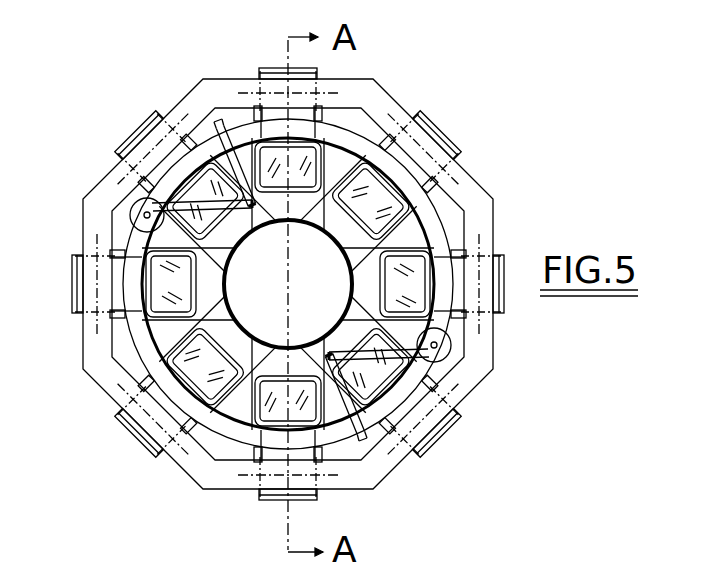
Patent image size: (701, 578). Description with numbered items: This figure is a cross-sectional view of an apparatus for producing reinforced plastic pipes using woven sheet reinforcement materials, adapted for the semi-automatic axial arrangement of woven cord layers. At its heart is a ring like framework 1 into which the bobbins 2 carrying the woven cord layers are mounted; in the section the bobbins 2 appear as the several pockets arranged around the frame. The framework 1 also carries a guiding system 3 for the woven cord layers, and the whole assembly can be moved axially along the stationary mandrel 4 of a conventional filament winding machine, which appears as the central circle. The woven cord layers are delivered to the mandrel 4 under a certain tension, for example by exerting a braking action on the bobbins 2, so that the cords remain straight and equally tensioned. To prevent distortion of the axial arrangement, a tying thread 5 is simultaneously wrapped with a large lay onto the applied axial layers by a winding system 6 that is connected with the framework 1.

The ring like framework 1 is at (492, 206).
The bobbins 2 is at (444, 132).
The guiding system 3 is at (337, 184).
The stationary mandrel 4 is at (313, 298).
The tying thread 5 is at (203, 206).
The winding system 6 is at (143, 347).